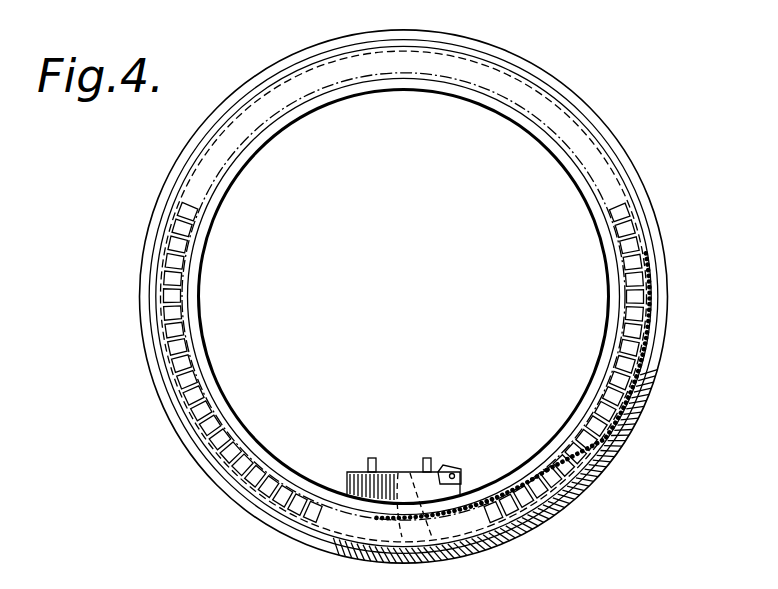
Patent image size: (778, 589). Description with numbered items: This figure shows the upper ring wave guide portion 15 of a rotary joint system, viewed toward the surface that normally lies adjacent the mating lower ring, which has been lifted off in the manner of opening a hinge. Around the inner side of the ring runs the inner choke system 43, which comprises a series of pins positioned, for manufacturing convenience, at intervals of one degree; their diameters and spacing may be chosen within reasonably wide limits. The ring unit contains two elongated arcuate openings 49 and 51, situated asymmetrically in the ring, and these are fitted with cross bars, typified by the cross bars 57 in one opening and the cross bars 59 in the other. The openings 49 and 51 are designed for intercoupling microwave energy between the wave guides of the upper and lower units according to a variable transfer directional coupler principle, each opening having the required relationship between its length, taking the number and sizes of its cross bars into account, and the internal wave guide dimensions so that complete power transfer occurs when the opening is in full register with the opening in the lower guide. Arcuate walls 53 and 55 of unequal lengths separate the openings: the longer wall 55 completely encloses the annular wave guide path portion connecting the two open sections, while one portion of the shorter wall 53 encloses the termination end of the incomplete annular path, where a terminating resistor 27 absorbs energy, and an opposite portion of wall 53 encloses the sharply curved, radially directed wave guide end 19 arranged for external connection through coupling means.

The upper ring wave guide portion 15 is at (160, 184).
The inner wave guide end 19 is at (398, 470).
The terminating resistor 27 is at (384, 545).
The inner choke system 43 is at (498, 488).
The elongated arcuate opening 49 is at (243, 477).
The elongated arcuate opening 51 is at (527, 528).
The arcuate wall 53 is at (343, 523).
The arcuate wall 55 is at (227, 133).
The cross bars 57 is at (200, 440).
The cross bars 59 is at (603, 473).